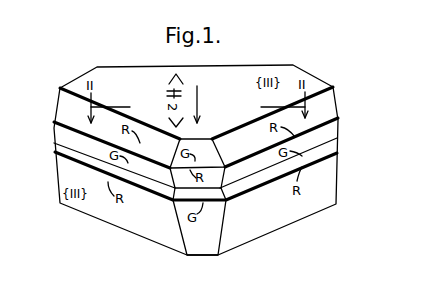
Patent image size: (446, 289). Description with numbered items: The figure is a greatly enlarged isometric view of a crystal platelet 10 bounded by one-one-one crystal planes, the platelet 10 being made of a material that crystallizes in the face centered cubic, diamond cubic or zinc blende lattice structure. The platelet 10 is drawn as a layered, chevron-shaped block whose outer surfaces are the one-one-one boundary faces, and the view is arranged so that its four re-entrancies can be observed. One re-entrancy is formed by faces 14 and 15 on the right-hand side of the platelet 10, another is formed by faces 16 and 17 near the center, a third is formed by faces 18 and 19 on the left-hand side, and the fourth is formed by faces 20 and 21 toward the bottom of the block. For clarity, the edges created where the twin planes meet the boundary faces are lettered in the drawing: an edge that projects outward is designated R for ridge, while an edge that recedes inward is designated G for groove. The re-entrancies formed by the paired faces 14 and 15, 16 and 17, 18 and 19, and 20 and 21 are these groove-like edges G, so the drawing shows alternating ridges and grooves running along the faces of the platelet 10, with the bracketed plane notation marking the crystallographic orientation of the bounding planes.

The platelet 10 is at (83, 78).
The face 14 is at (328, 135).
The face 15 is at (330, 148).
The face 16 is at (204, 139).
The face 17 is at (219, 162).
The face 18 is at (70, 137).
The face 19 is at (65, 149).
The face 20 is at (227, 200).
The face 21 is at (200, 240).